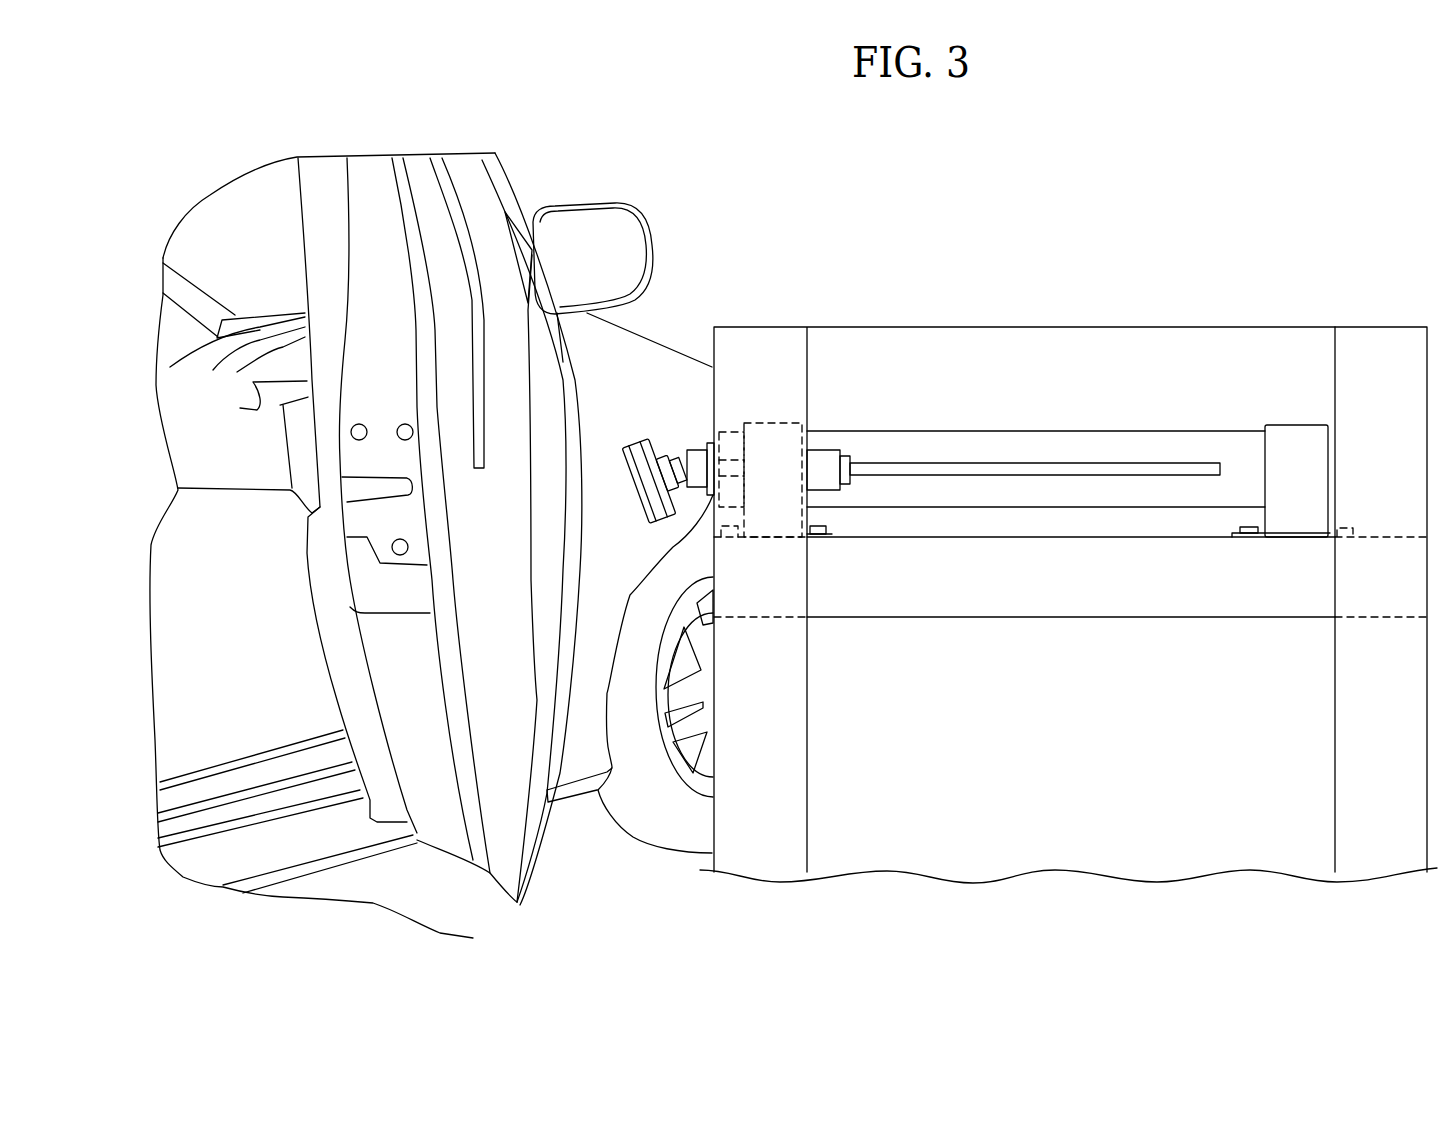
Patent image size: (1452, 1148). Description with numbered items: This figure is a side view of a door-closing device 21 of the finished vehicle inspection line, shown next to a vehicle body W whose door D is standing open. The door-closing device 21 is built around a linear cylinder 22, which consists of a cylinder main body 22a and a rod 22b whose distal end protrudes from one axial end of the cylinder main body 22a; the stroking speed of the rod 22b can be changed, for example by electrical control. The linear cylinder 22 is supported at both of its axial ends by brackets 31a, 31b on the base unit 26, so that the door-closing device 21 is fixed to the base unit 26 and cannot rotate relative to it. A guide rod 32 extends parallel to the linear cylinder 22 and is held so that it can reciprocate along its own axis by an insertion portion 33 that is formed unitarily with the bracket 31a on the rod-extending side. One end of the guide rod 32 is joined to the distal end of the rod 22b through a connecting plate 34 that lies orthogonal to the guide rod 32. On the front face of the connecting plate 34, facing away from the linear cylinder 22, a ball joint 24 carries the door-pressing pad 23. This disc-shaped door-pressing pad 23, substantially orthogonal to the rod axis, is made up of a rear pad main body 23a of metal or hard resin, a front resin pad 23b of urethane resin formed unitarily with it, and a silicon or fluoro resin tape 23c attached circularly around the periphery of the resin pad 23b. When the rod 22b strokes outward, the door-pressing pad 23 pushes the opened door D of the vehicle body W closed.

The door D is at (547, 297).
The vehicle body W is at (637, 333).
The door-closing device 21 is at (1136, 350).
The linear cylinder 22 is at (1050, 417).
The cylinder main body 22a is at (988, 438).
The rod 22b is at (718, 437).
The door-pressing pad 23 is at (637, 543).
The pad main body 23a is at (645, 443).
The resin pad 23b is at (623, 447).
The silicon or fluoro resin tape 23c is at (640, 497).
The ball joint 24 is at (673, 437).
The base unit 26 is at (1380, 310).
The bracket 31a is at (773, 430).
The bracket 31b is at (1295, 437).
The guide rod 32 is at (935, 467).
The insertion portion 33 is at (823, 457).
The connecting plate 34 is at (707, 450).